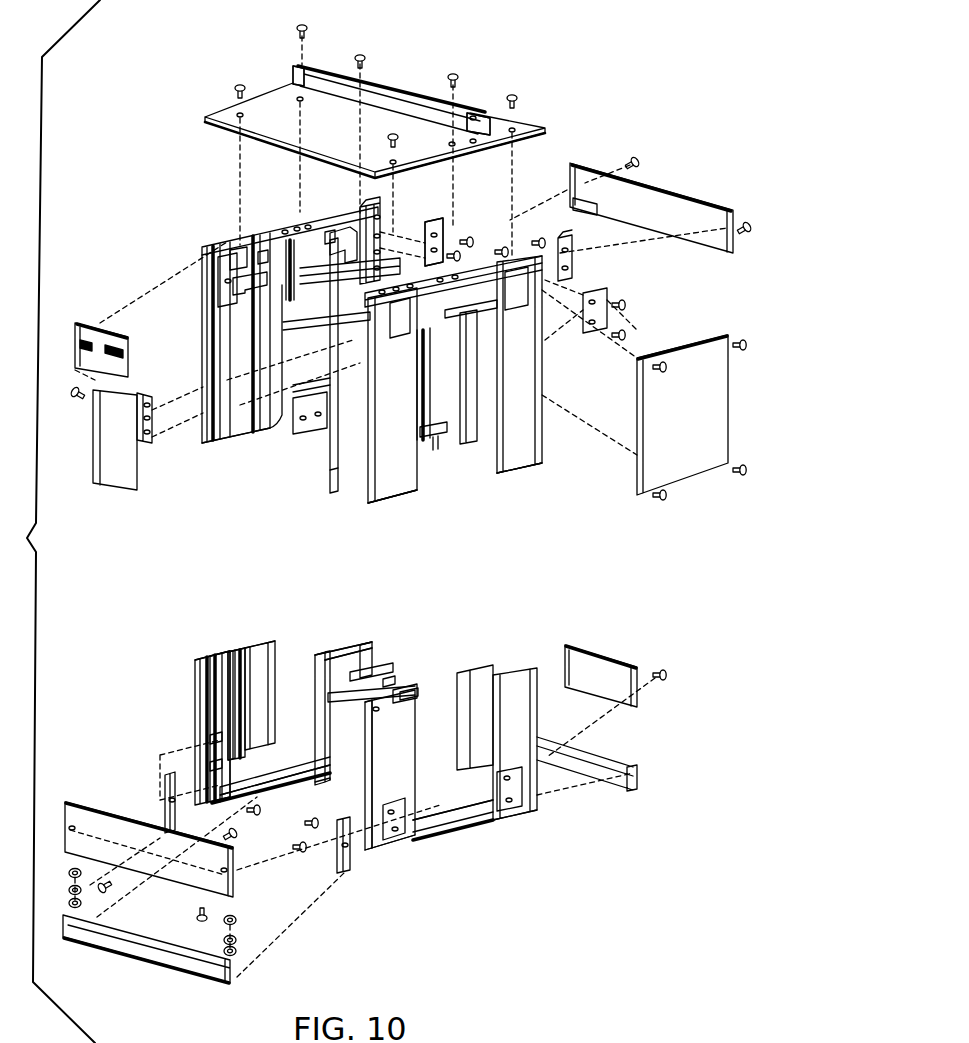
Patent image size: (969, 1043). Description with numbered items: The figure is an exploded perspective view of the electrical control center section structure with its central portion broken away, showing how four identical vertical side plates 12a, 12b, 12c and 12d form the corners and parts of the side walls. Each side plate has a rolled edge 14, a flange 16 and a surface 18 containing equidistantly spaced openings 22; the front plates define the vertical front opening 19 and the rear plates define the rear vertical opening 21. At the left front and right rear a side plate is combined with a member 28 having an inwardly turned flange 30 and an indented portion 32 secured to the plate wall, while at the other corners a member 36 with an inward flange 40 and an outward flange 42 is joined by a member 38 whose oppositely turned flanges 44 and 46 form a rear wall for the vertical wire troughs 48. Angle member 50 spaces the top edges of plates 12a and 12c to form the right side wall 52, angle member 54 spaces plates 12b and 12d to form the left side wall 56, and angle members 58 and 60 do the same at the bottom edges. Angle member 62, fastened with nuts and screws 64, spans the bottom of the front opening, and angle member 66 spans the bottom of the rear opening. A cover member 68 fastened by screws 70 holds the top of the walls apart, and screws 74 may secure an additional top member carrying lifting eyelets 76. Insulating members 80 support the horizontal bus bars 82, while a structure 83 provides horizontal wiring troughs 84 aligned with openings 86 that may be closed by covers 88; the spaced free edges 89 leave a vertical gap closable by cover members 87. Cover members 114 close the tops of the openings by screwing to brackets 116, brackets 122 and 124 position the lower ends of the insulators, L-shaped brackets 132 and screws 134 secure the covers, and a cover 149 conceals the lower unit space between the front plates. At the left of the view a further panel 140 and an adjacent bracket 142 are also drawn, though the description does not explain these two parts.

The side plate 12a is at (407, 448).
The side plate 12b is at (230, 248).
The side plate 12c is at (532, 373).
The side plate 12d is at (368, 205).
The rolled edge 14 is at (198, 667).
The flange 16 is at (204, 662).
The surface 18 is at (218, 663).
The vertical front opening 19 is at (320, 473).
The rear vertical opening 21 is at (490, 788).
The openings 22 is at (215, 765).
The member 28 is at (258, 658).
The flange 30 is at (277, 655).
The indented portion 32 is at (240, 650).
The member 36 is at (349, 729).
The member 38 is at (400, 697).
The flange 40 is at (392, 673).
The flange 42 is at (328, 784).
The flange 44 is at (396, 687).
The flange 46 is at (405, 705).
The vertical wire troughs 48 is at (356, 776).
The angle member 50 is at (481, 286).
The right side wall 52 is at (522, 466).
The angle member 54 is at (320, 225).
The left side wall 56 is at (300, 677).
The angle member 58 is at (281, 774).
The angle member 60 is at (450, 826).
The angle member 62 is at (152, 950).
The nuts and screws 64 is at (70, 873).
The angle member 66 is at (611, 766).
The cover member 68 is at (398, 90).
The screws 70 is at (241, 91).
The screws 74 is at (302, 22).
The lifting eyelets 76 is at (305, 77).
The insulating members 80 is at (289, 240).
The horizontal bus bars 82 is at (340, 284).
The structure 83 is at (263, 252).
The horizontal wiring troughs 84 is at (427, 243).
The openings 86 is at (238, 255).
The cover members 87 is at (718, 418).
The covers 88 is at (505, 795).
The free edges 89 is at (495, 476).
The cover members 114 is at (670, 203).
The brackets 116 is at (222, 281).
The bracket 122 is at (312, 427).
The bracket 124 is at (428, 452).
The L-shaped brackets 132 is at (165, 790).
The screws 134 is at (202, 918).
The door panel 140 is at (117, 485).
The hinge bracket 142 is at (147, 446).
The cover 149 is at (193, 853).